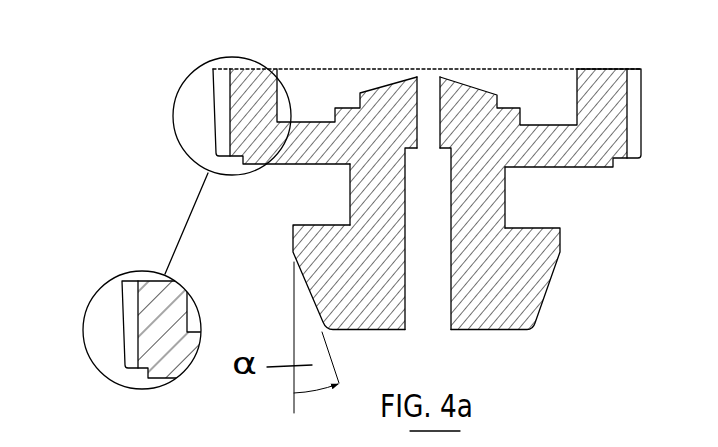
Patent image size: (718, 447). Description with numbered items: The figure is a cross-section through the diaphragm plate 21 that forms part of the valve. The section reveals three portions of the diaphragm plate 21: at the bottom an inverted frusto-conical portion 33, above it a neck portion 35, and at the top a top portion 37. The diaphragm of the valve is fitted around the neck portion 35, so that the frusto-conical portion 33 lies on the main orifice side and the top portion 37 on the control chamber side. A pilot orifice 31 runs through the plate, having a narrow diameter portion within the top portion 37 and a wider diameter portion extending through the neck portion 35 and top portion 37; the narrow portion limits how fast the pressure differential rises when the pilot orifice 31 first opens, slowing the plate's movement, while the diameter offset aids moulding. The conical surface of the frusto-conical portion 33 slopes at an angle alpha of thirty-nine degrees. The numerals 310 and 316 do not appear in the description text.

The diaphragm plate 21 is at (523, 63).
The slot 310 is at (430, 118).
The top portion 37 is at (607, 133).
The pilot orifice 31 is at (403, 211).
The bore lower portion 316 is at (442, 258).
The neck portion 35 is at (490, 210).
The inverted frusto-conical portion 33 is at (528, 302).